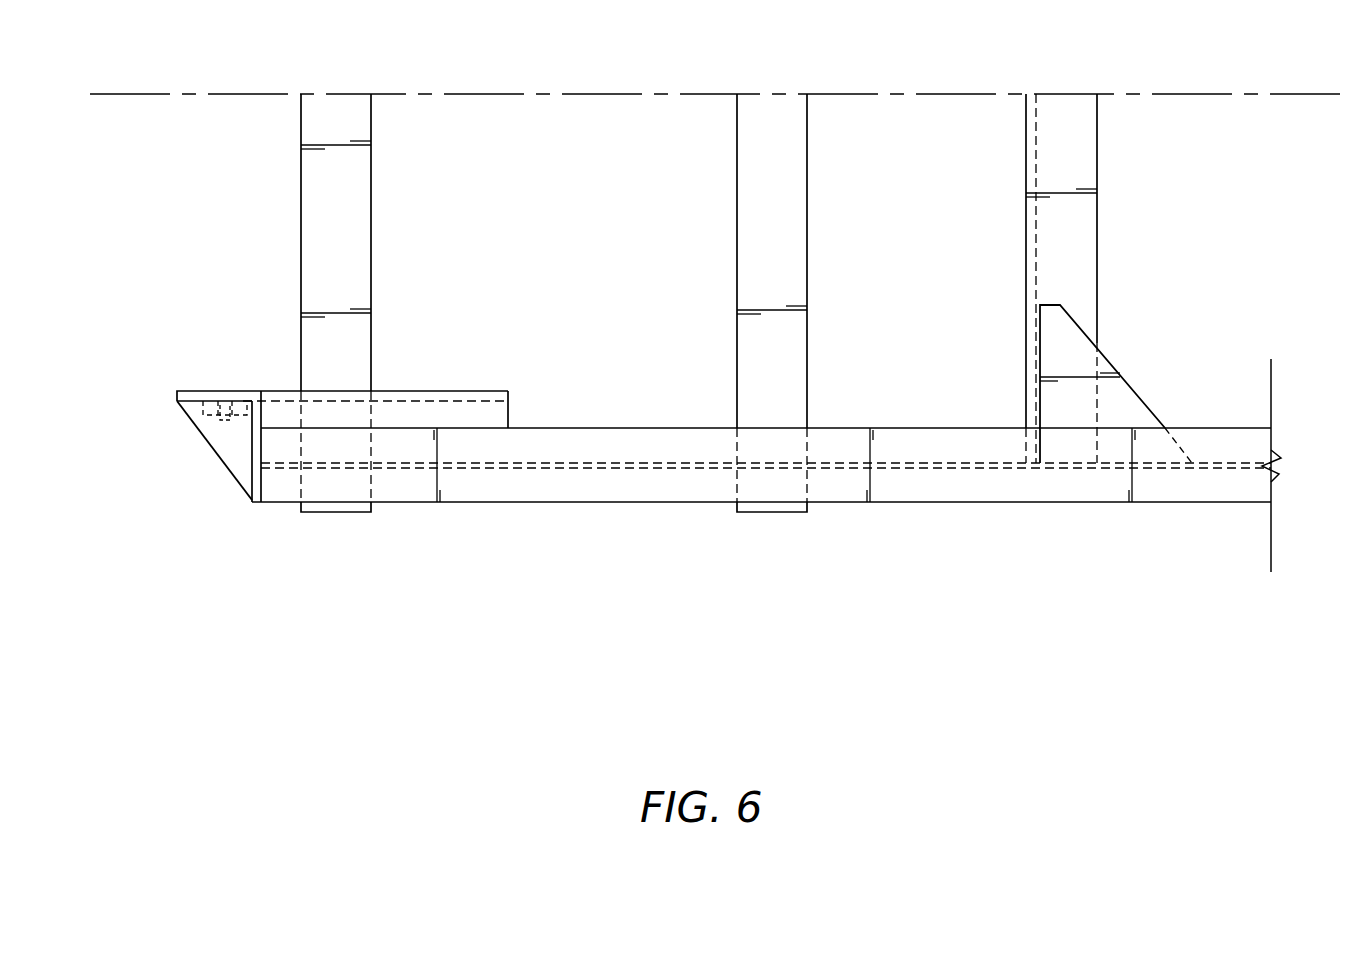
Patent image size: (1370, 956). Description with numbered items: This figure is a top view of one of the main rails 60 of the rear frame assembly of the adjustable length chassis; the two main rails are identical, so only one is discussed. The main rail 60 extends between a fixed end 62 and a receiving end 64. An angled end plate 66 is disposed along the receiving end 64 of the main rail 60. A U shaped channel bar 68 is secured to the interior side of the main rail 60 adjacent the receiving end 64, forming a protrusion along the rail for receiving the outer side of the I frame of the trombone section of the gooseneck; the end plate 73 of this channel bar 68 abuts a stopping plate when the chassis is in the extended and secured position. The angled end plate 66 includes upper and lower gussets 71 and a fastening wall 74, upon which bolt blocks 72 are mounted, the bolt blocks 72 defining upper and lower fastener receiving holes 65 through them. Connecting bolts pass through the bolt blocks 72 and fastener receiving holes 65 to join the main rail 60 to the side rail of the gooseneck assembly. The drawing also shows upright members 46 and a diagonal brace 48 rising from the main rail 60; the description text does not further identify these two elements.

The upright post 46 is at (372, 213).
The diagonal brace 48 is at (1135, 405).
The main rail 60 is at (984, 599).
The fixed end 62 is at (1297, 391).
The receiving end 64 is at (176, 442).
The fastener receiving holes 65 is at (226, 420).
The angled end plate 66 is at (257, 422).
The U shaped channel bar 68 is at (417, 371).
The gussets 71 is at (245, 487).
The bolt blocks 72 is at (197, 414).
The end plate 73 is at (510, 410).
The fastening wall 74 is at (197, 400).